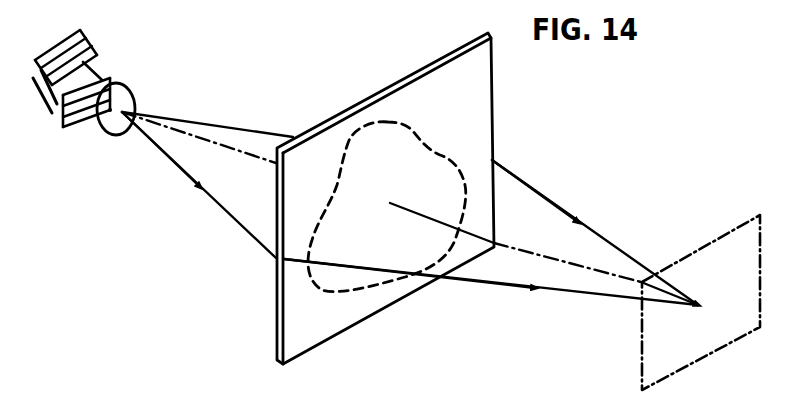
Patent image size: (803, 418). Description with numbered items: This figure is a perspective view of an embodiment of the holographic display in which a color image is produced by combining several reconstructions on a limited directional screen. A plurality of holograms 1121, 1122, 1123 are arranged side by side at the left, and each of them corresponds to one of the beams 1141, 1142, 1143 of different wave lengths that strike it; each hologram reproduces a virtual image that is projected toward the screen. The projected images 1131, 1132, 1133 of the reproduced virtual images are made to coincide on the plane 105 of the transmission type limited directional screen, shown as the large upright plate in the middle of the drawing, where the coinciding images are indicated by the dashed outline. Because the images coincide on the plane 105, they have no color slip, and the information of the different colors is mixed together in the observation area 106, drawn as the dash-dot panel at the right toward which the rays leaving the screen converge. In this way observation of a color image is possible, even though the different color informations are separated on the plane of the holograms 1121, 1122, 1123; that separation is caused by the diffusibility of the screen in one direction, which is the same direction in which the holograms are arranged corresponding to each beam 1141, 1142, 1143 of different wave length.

The plane of the limited directional screen 105 is at (293, 325).
The observation area 106 is at (738, 237).
The first hologram 1121 is at (112, 82).
The second hologram 1122 is at (132, 93).
The third hologram 1123 is at (75, 125).
The first projected image 1131 is at (460, 207).
The second projected image 1132 is at (460, 207).
The third projected image 1133 is at (433, 160).
The first beam 1141 is at (80, 40).
The second beam 1142 is at (84, 38).
The third beam 1143 is at (98, 52).